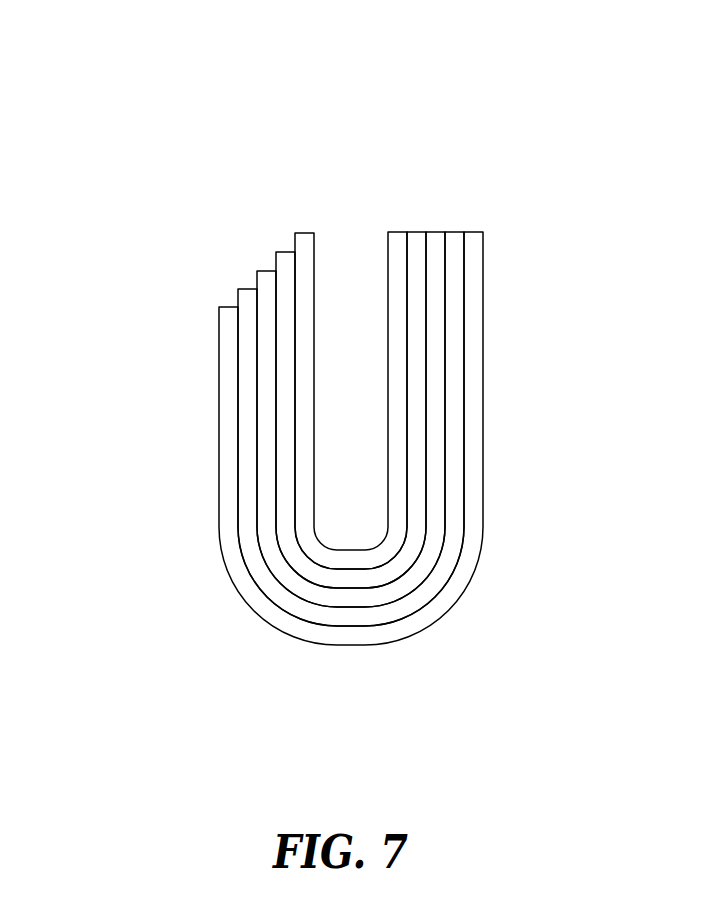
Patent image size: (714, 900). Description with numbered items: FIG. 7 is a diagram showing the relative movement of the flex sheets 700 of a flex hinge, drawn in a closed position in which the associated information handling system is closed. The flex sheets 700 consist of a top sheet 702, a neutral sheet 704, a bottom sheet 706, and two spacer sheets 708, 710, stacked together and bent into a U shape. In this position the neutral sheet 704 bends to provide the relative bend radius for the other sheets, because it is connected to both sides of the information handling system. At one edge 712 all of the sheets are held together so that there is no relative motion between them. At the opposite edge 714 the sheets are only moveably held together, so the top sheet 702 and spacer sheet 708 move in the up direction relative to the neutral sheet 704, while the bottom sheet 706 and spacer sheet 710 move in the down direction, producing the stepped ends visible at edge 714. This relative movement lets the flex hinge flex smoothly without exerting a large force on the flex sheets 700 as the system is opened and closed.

The flex sheets 700 is at (530, 122).
The top sheet 702 is at (303, 245).
The neutral sheet 704 is at (262, 273).
The bottom sheet 706 is at (231, 355).
The spacer sheet 708 is at (283, 263).
The spacer sheet 710 is at (249, 297).
The edge 712 is at (508, 232).
The edge 714 is at (158, 218).